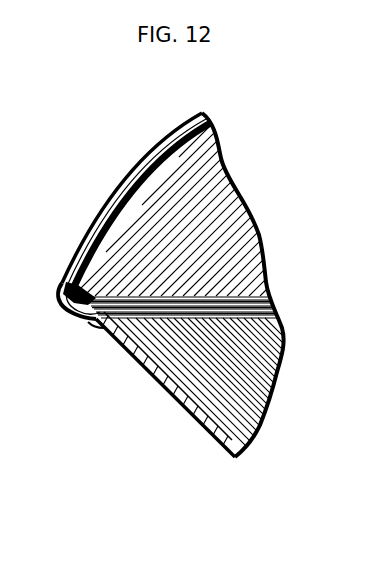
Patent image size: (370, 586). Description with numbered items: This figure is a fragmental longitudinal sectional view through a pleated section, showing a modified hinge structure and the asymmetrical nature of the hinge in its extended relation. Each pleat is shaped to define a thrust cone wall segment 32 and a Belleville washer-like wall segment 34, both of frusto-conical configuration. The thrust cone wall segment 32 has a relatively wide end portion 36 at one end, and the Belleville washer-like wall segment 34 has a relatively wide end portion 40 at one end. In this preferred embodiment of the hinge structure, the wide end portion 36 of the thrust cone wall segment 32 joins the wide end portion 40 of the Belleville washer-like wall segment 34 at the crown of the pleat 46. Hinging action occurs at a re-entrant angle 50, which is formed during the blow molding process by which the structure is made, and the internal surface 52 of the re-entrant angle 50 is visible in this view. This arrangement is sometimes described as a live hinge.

The thrust cone wall segment 32 is at (170, 396).
The Belleville washer-like wall segment 34 is at (130, 176).
The wide end portion 36 is at (93, 342).
The wide end portion 40 is at (58, 285).
The crown of the pleat 46 is at (60, 300).
The re-entrant angle 50 is at (88, 326).
The internal surface 52 is at (226, 310).